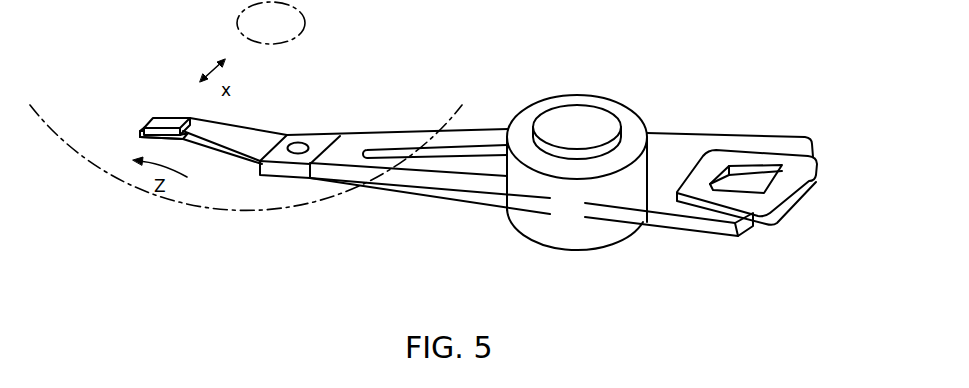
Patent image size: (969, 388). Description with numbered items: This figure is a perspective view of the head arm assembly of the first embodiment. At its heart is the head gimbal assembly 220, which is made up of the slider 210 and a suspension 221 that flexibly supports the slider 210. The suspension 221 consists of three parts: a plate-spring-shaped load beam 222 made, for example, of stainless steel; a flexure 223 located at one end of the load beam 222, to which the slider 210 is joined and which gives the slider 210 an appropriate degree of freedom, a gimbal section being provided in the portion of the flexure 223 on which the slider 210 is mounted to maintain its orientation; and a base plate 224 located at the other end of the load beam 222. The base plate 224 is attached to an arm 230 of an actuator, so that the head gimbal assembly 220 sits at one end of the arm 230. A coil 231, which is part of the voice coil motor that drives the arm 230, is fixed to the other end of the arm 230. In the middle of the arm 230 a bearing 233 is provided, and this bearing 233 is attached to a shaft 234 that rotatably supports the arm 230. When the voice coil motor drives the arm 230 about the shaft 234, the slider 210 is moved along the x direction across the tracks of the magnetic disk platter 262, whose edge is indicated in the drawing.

The slider 210 is at (172, 124).
The head gimbal assembly 220 is at (252, 178).
The suspension 221 is at (248, 129).
The load beam 222 is at (268, 138).
The flexure 223 is at (144, 127).
The base plate 224 is at (333, 132).
The arm 230 is at (396, 187).
The coil 231 is at (800, 201).
The bearing 233 is at (527, 113).
The shaft 234 is at (587, 115).
The magnetic disk platter 262 is at (182, 200).